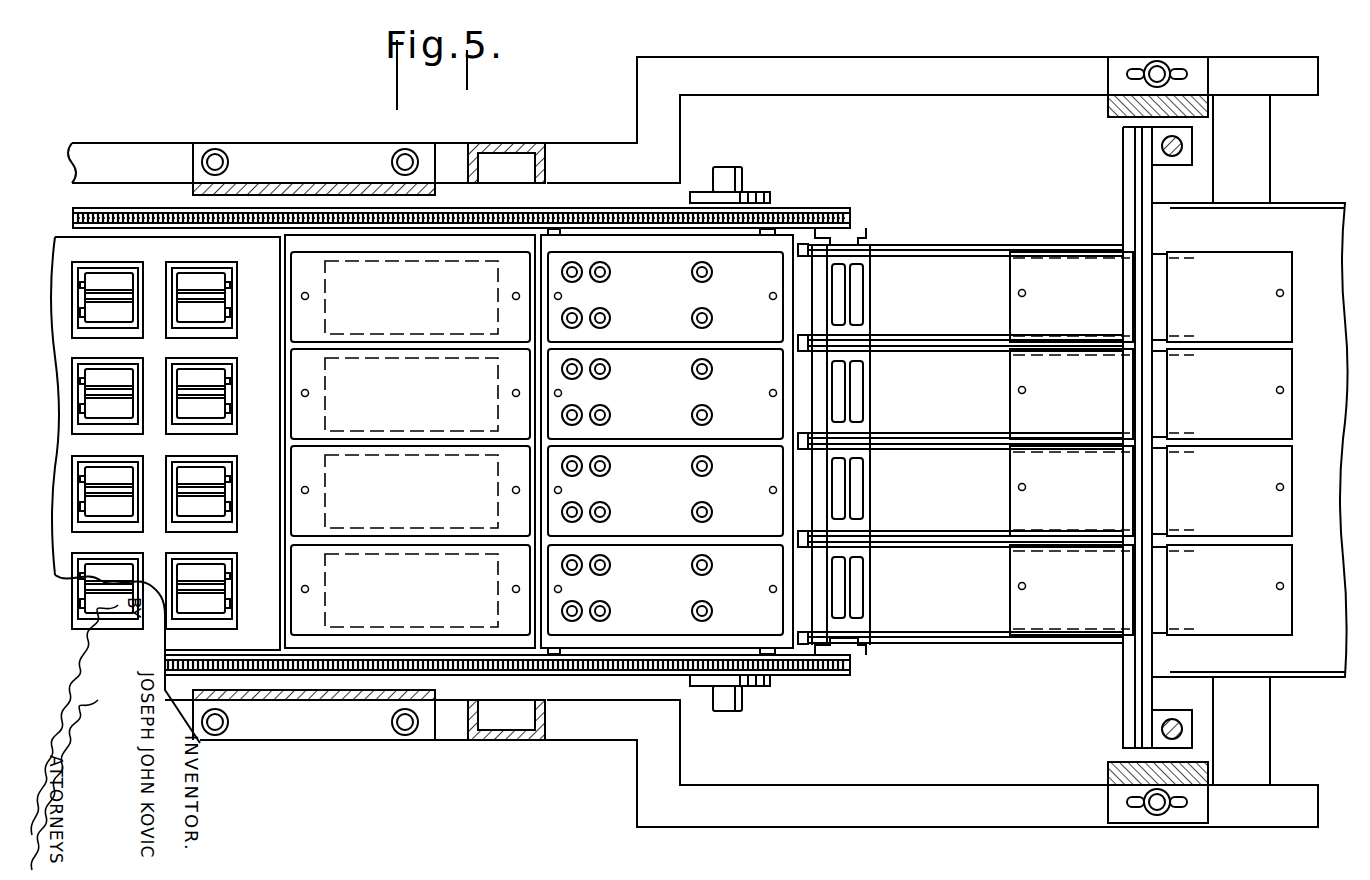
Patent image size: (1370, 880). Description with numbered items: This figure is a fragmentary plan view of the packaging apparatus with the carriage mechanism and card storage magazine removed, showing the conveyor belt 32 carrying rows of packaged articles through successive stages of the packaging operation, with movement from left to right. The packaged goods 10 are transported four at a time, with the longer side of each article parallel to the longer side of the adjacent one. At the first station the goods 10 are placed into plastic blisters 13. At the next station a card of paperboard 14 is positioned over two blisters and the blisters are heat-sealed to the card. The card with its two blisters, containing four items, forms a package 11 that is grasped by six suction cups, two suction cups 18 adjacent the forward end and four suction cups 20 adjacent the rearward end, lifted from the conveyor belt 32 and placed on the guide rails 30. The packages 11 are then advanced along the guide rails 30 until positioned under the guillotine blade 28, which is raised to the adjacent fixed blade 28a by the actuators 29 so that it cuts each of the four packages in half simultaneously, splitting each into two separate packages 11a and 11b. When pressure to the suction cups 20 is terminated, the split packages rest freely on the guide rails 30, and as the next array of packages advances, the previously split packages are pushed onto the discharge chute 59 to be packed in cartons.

The packaged goods 10 is at (176, 268).
The plastic blisters 13 is at (96, 268).
The package 11 is at (284, 299).
The card of paperboard 14 is at (306, 258).
The suction cups 18 is at (695, 282).
The suction cups 20 is at (600, 265).
The conveyor belt 32 is at (840, 207).
The guide rails 30 is at (980, 332).
The split package 11a is at (1062, 618).
The split package 11b is at (1286, 626).
The guillotine blade 28 is at (1137, 144).
The fixed blade 28a is at (1140, 723).
The actuators 29 is at (1183, 728).
The discharge chute 59 is at (1313, 218).